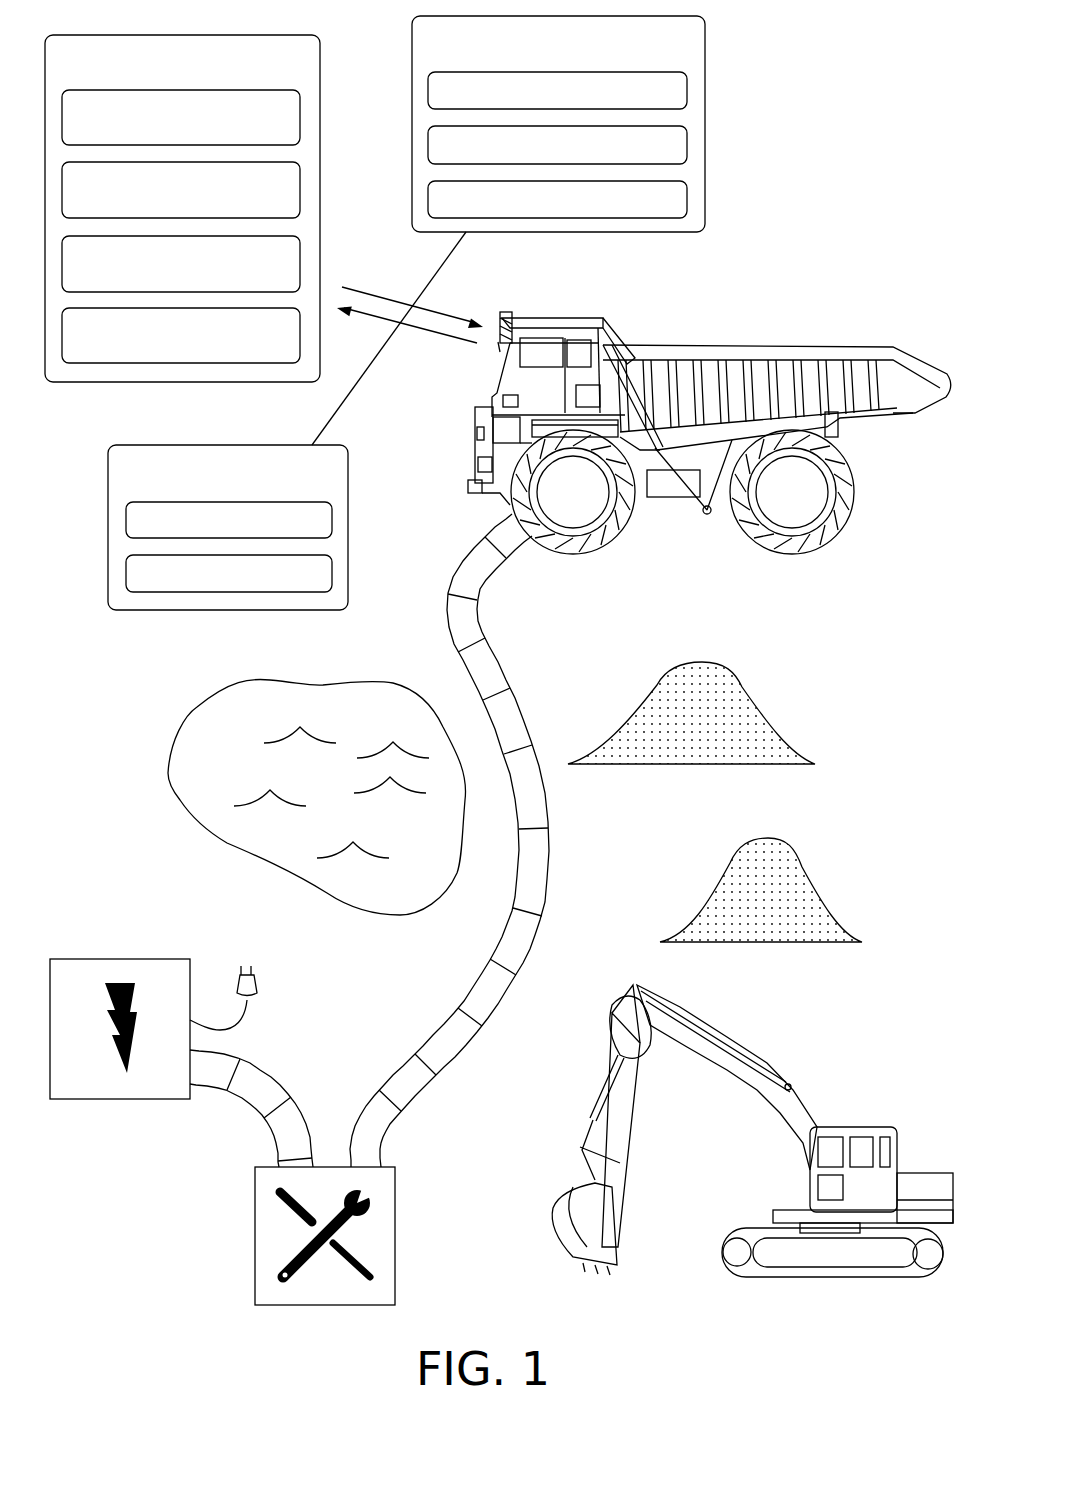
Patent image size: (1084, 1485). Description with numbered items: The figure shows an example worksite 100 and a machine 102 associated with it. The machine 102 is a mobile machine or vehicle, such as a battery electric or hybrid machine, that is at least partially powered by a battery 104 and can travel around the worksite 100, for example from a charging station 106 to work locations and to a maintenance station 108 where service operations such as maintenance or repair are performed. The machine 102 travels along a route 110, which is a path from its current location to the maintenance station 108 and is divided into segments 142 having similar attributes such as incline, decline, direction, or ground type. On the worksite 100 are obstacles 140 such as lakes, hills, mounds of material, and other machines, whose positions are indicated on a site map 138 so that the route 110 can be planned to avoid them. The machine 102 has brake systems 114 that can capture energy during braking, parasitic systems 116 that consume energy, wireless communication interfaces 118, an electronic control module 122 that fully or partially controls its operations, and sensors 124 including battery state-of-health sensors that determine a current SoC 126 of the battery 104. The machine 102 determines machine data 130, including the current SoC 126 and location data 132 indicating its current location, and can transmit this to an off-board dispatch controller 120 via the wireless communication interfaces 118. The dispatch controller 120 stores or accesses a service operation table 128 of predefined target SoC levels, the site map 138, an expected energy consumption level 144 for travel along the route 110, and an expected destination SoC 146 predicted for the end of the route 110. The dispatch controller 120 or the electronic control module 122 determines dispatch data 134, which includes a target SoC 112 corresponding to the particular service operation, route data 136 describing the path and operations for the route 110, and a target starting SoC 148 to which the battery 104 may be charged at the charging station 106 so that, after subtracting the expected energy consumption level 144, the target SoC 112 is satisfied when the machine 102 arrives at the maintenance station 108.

The worksite 100 is at (815, 121).
The machine 102 is at (722, 367).
The battery 104 is at (613, 423).
The charging station 106 is at (97, 1077).
The maintenance station 108 is at (378, 1235).
The route 110 is at (530, 666).
The target SoC 112 is at (557, 90).
The brake systems 114 is at (498, 508).
The parasitic systems 116 is at (477, 425).
The wireless communication interfaces 118 is at (505, 338).
The dispatch controller 120 is at (182, 208).
The electronic control module 122 is at (512, 395).
The sensors 124 is at (498, 345).
The current SoC 126 is at (229, 520).
The service operation table 128 is at (181, 117).
The machine data 130 is at (228, 527).
The location data 132 is at (229, 573).
The dispatch data 134 is at (558, 124).
The route data 136 is at (557, 145).
The site map 138 is at (181, 190).
The obstacles 140 is at (207, 762).
The segments 142 is at (533, 850).
The expected energy consumption level 144 is at (181, 264).
The expected destination SoC 146 is at (181, 335).
The target starting SoC 148 is at (557, 199).